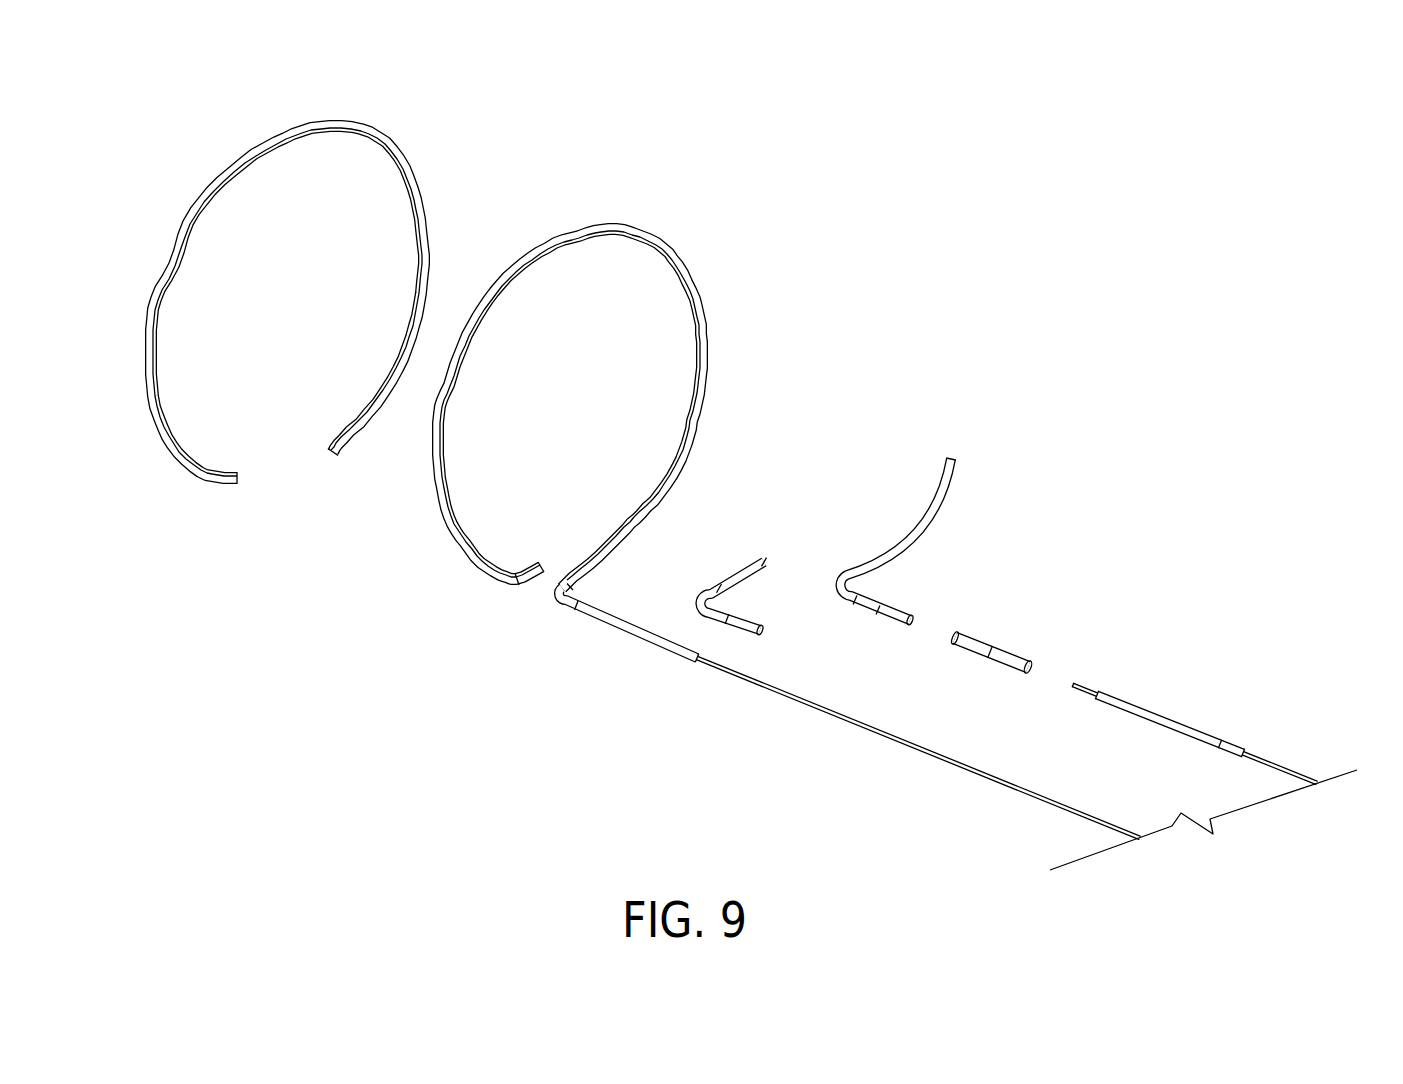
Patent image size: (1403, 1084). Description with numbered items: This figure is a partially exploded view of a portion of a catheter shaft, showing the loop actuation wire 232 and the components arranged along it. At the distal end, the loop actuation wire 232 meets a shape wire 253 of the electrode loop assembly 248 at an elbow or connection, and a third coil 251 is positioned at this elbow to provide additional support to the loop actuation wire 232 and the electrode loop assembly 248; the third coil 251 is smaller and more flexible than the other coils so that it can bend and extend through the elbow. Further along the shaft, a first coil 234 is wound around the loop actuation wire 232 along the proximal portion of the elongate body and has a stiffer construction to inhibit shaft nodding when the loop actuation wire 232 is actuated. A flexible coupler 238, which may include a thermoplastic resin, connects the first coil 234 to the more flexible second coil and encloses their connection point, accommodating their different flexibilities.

The electrode loop assembly 248 is at (212, 153).
The shape wire 253 is at (661, 240).
The third coil 251 is at (741, 572).
The flexible coupler 238 is at (990, 642).
The first coil 234 is at (1150, 705).
The loop actuation wire 232 is at (857, 731).